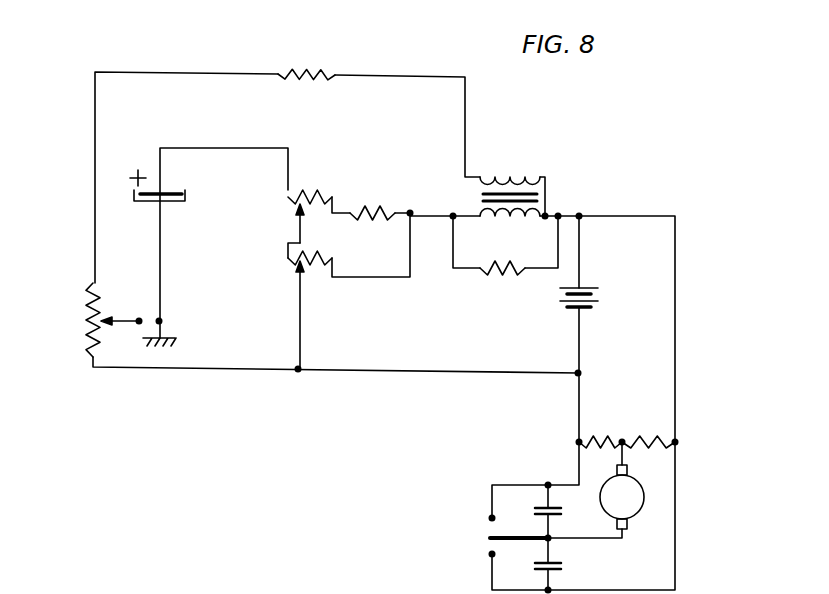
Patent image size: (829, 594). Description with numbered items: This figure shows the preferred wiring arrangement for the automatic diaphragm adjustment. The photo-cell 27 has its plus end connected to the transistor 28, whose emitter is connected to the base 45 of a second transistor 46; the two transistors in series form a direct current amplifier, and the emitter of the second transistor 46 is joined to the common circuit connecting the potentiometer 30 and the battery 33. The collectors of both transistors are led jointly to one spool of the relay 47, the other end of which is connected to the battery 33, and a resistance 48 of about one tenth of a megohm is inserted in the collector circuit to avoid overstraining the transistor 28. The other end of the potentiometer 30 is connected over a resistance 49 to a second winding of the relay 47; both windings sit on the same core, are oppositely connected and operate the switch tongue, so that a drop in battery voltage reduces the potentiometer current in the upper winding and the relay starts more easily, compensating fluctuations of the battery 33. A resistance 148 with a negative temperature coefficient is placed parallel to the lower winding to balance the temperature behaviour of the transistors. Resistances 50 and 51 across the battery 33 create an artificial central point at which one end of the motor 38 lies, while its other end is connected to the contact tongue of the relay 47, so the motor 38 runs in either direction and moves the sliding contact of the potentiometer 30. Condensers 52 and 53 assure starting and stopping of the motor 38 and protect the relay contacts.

The photo-cell 27 is at (170, 204).
The transistor 28 is at (303, 192).
The potentiometer 30 is at (86, 305).
The battery 33 is at (600, 296).
The motor 38 is at (636, 516).
The base 45 is at (298, 233).
The second transistor 46 is at (322, 268).
The relay 47 is at (478, 197).
The resistance 48 is at (365, 206).
The resistance 49 is at (320, 68).
The resistance 50 is at (601, 436).
The resistance 51 is at (645, 438).
The condenser 52 is at (534, 510).
The condenser 53 is at (530, 566).
The resistance 148 is at (500, 280).